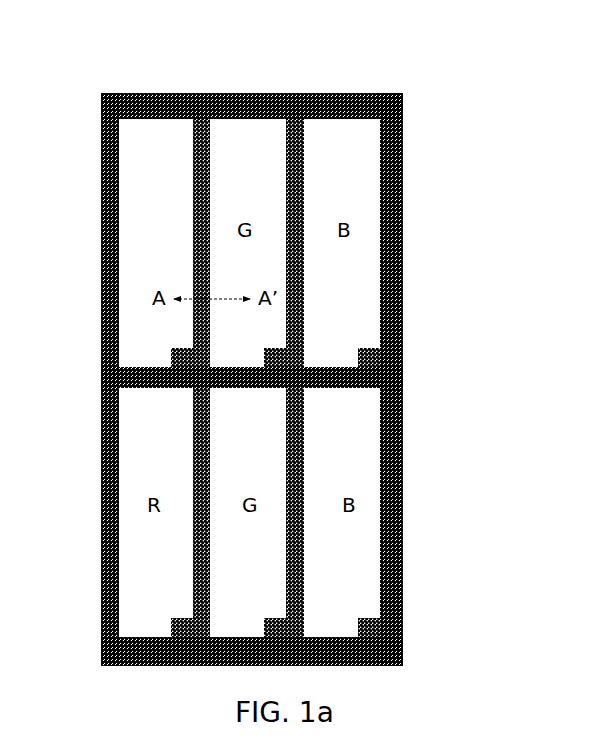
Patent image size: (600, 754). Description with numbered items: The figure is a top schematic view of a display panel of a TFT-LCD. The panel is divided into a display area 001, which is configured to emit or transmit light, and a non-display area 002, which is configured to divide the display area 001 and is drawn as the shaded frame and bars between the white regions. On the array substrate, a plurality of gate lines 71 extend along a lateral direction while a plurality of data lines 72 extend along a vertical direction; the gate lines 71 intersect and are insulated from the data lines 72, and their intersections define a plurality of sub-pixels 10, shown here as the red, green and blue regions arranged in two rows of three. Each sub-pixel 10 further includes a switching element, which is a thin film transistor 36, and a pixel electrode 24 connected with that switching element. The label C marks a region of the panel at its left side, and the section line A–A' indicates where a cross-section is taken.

The sub-pixel 10 is at (403, 502).
The non-display area 002 is at (132, 93).
The display area 001 is at (158, 135).
The pixel column C is at (100, 213).
The data line 72 is at (402, 92).
The pixel electrode 24 is at (403, 176).
The gate line 71 is at (402, 378).
The thin film transistor 36 is at (403, 633).